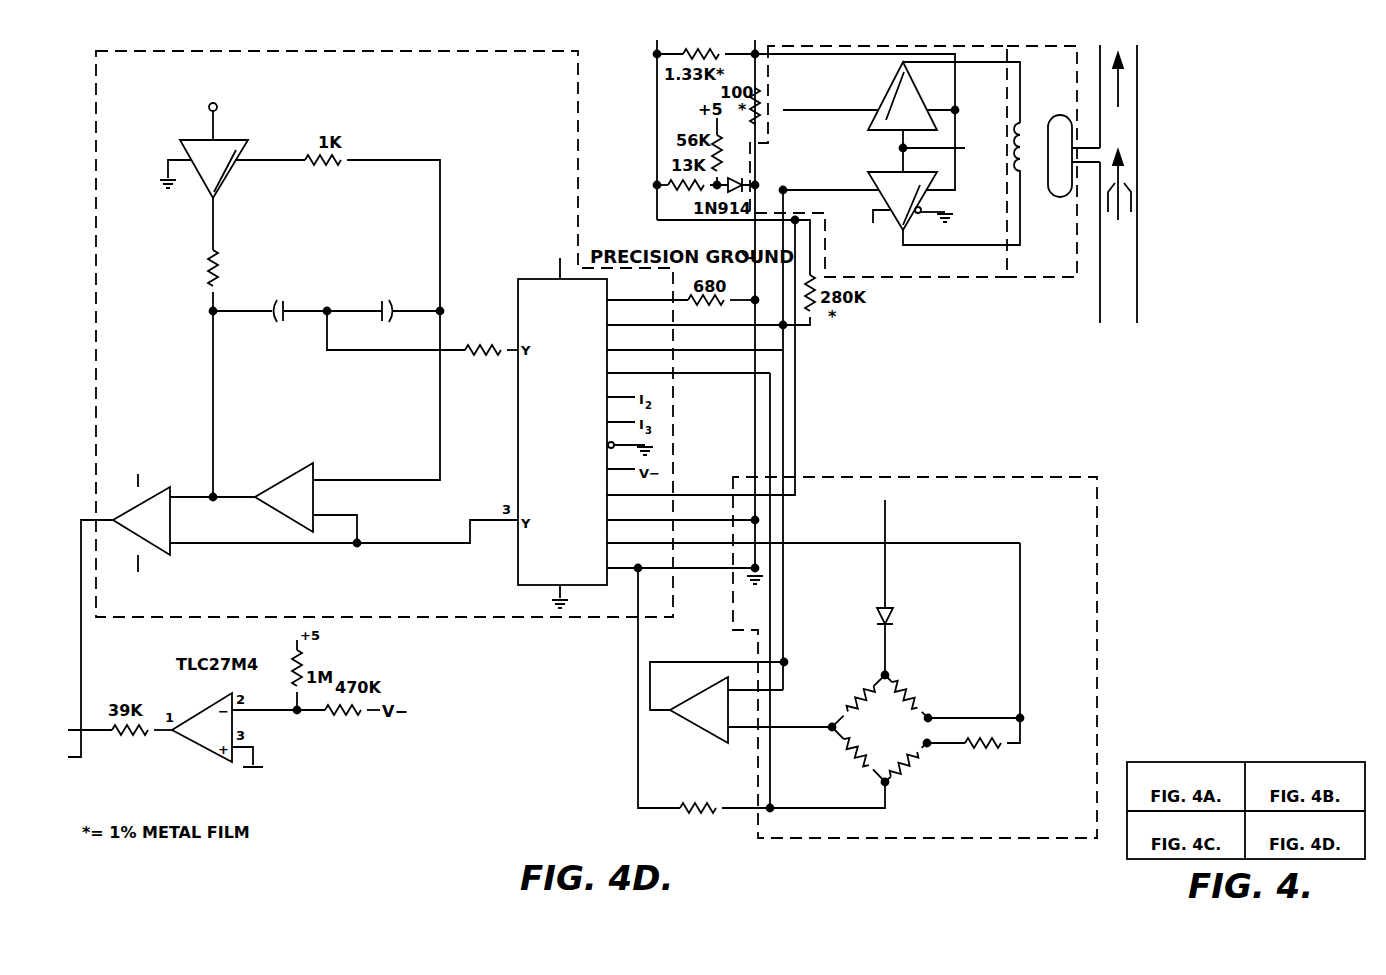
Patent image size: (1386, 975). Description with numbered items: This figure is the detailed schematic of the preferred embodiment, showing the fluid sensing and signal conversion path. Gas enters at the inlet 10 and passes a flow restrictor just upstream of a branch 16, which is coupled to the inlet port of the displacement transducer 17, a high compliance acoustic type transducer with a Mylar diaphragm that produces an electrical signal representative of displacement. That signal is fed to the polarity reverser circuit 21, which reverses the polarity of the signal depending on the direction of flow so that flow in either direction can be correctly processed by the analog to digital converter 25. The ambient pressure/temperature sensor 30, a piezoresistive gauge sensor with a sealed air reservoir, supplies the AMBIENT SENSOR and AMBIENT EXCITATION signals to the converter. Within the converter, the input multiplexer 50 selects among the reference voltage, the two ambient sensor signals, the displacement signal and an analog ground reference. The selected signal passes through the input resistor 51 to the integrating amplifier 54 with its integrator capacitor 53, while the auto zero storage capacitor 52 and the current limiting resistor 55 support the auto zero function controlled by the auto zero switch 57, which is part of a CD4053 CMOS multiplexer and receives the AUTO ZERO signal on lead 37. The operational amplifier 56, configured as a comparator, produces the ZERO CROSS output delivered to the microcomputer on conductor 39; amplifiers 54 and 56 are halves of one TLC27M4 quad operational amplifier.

The inlet 10 is at (1123, 323).
The branch 16 is at (1088, 165).
The displacement transducer 17 is at (1036, 282).
The polarity reverser circuit 21 is at (960, 282).
The analog to digital converter 25 is at (565, 81).
The ambient pressure/temperature sensor 30 is at (1078, 611).
The lead 37 is at (217, 106).
The conductor 39 is at (81, 672).
The input multiplexer 50 is at (516, 290).
The input resistor 51 is at (486, 356).
The auto zero storage capacitor 52 is at (392, 302).
The integrator capacitor 53 is at (274, 324).
The integrating amplifier 54 is at (273, 510).
The current limiting resistor 55 is at (217, 260).
The operational amplifier 56 is at (164, 490).
The auto zero switch 57 is at (191, 149).